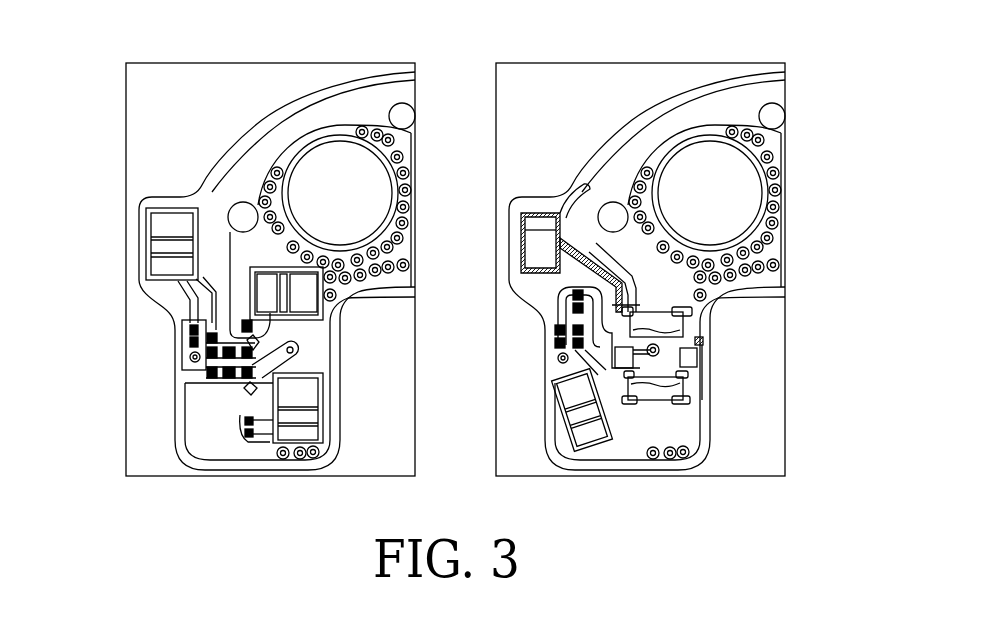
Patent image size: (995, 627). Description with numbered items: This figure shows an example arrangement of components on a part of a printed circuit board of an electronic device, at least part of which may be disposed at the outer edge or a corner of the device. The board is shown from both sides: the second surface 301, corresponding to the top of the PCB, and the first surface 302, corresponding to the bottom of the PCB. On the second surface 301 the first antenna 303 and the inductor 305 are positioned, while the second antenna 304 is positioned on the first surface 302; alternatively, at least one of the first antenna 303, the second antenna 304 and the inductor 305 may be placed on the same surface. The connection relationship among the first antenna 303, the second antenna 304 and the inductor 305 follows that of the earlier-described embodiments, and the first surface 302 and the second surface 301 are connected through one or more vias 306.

The second surface 301 is at (326, 44).
The first surface 302 is at (696, 44).
The first antenna 303 is at (146, 242).
The second antenna 304 is at (610, 417).
The inductor 305 is at (178, 347).
The via 306 is at (406, 240).